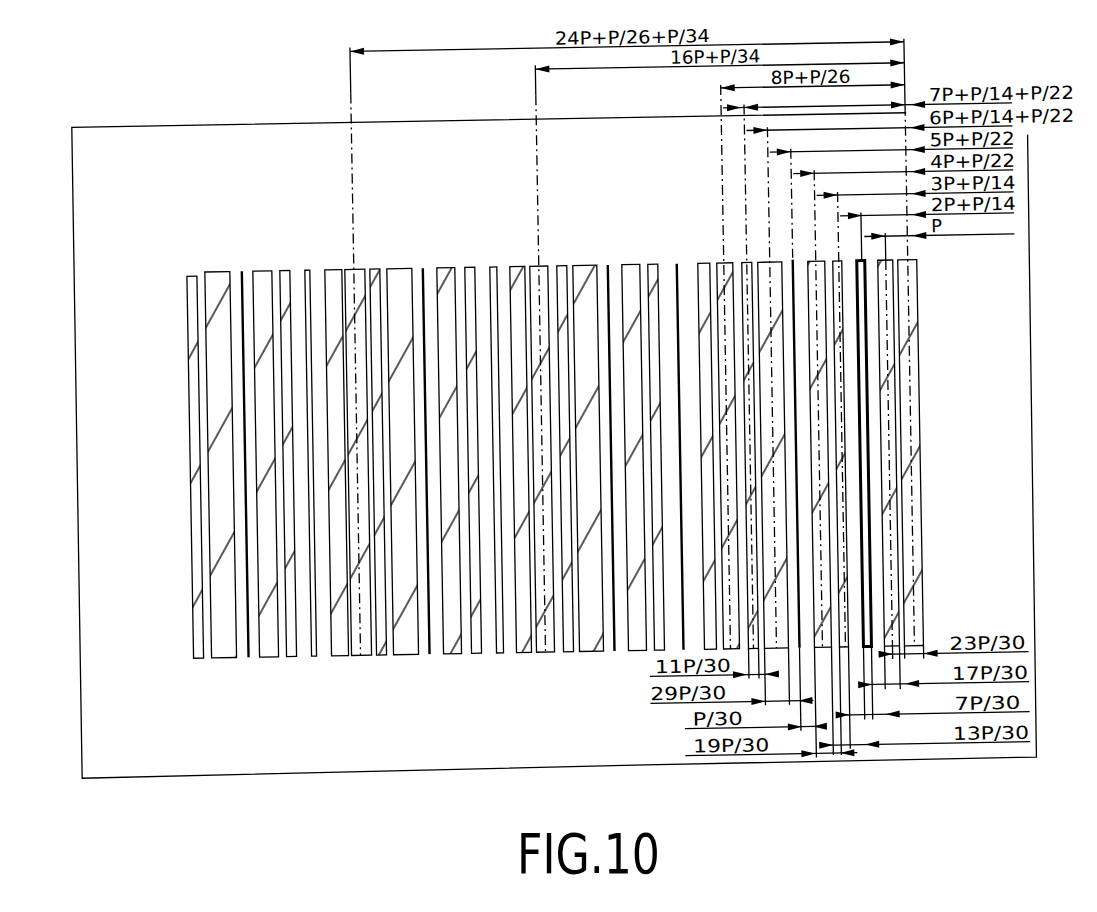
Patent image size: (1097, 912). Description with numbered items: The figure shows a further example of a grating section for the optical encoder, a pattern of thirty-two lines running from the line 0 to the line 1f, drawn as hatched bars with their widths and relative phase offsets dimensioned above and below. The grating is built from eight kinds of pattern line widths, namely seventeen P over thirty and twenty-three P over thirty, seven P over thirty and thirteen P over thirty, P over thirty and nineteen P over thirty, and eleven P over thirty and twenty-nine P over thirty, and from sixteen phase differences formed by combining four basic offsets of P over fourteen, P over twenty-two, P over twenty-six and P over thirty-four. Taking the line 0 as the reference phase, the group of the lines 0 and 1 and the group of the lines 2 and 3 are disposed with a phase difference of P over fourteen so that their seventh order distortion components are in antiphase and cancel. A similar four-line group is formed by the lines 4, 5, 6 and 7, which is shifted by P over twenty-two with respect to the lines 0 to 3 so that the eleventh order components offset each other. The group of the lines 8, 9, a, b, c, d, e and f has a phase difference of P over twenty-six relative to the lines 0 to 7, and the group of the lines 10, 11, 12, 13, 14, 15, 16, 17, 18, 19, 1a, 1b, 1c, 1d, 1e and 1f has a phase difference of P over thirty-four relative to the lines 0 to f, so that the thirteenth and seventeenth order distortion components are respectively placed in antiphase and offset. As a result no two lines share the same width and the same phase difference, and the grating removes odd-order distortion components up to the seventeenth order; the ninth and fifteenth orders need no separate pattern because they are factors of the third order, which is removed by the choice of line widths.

The line 0 is at (921, 294).
The line 1 is at (881, 344).
The line 2 is at (1033, 279).
The line 3 is at (838, 404).
The line 4 is at (815, 266).
The line 5 is at (796, 266).
The line 6 is at (773, 266).
The line 7 is at (750, 266).
The line 8 is at (724, 266).
The line 9 is at (707, 266).
The line a is at (680, 266).
The line b is at (656, 266).
The line c is at (634, 266).
The line d is at (611, 266).
The line e is at (588, 266).
The line f is at (565, 266).
The line 10 is at (543, 266).
The line 11 is at (520, 266).
The line 12 is at (496, 266).
The line 13 is at (473, 266).
The line 14 is at (449, 266).
The line 15 is at (426, 266).
The line 16 is at (403, 266).
The line 17 is at (378, 266).
The line 18 is at (358, 266).
The line 19 is at (336, 266).
The line 1a is at (310, 266).
The line 1b is at (288, 266).
The line 1c is at (265, 266).
The line 1d is at (245, 266).
The line 1e is at (220, 266).
The line 1f is at (195, 270).